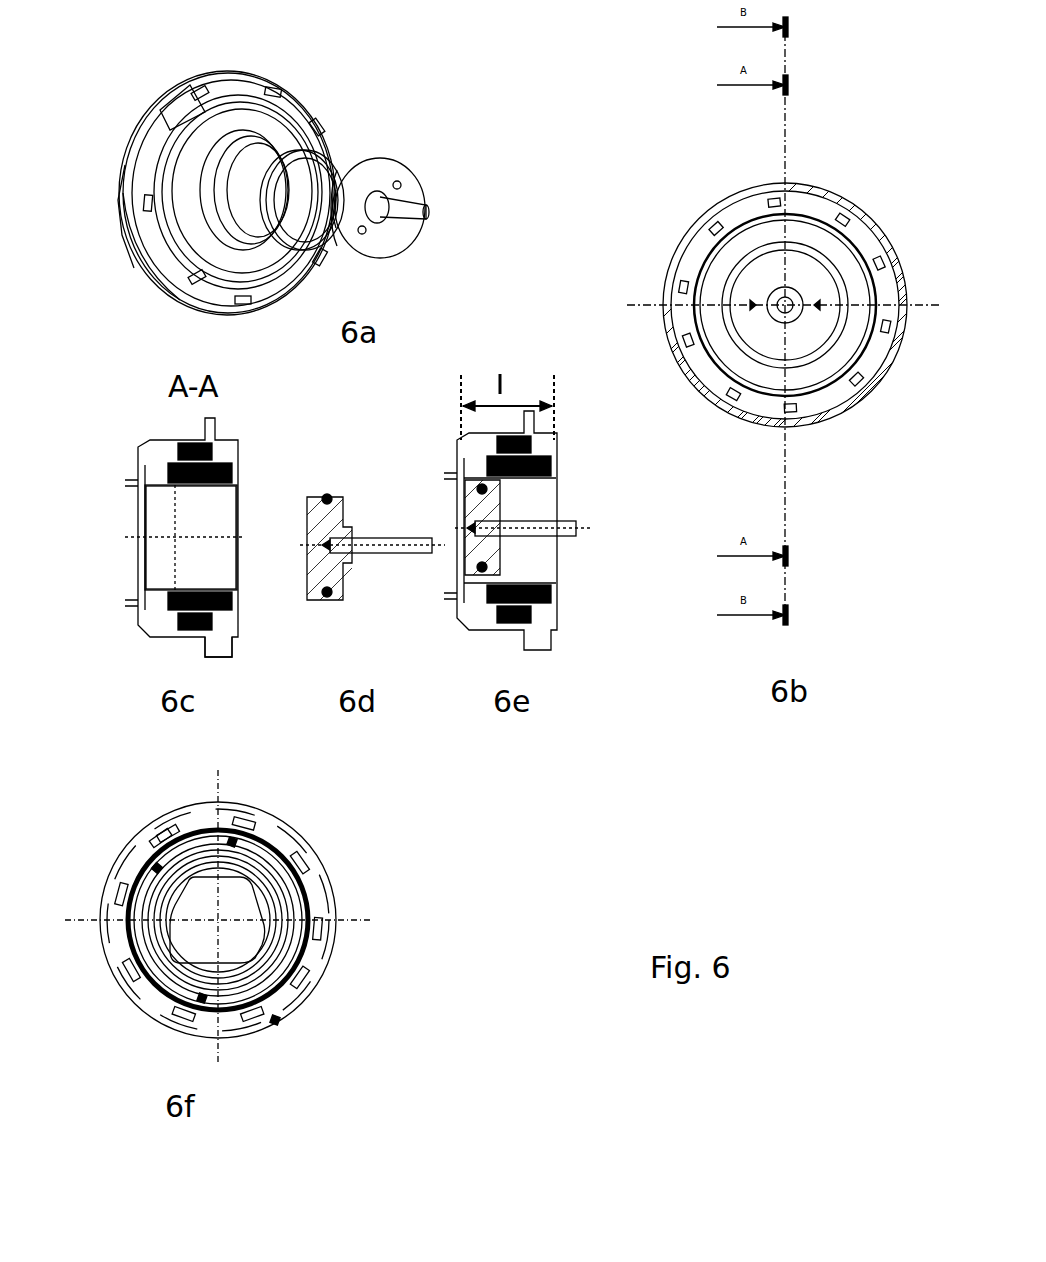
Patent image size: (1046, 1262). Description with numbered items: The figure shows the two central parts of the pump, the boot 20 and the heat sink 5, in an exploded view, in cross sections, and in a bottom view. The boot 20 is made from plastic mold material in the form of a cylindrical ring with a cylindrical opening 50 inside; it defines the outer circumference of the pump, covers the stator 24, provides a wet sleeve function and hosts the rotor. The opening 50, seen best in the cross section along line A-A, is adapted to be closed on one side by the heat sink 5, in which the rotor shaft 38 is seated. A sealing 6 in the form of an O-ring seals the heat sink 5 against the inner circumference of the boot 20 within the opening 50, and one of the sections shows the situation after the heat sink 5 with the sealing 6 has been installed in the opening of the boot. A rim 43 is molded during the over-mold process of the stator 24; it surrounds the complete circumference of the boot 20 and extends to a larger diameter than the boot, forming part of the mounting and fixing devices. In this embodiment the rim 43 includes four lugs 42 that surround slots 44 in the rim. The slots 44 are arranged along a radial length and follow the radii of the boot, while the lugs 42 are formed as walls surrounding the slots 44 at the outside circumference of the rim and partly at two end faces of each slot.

The heat sink 5 is at (393, 172).
The sealing 6 is at (338, 153).
The boot 20 is at (326, 112).
The stator 24 is at (216, 470).
The rotor shaft 38 is at (373, 552).
The lugs 42 is at (178, 101).
The rim 43 is at (150, 258).
The slots 44 is at (741, 200).
The opening 50 is at (165, 543).